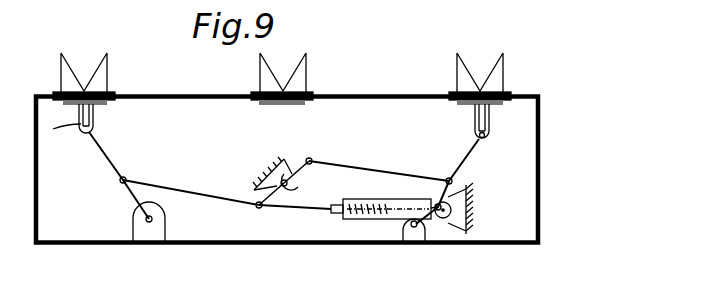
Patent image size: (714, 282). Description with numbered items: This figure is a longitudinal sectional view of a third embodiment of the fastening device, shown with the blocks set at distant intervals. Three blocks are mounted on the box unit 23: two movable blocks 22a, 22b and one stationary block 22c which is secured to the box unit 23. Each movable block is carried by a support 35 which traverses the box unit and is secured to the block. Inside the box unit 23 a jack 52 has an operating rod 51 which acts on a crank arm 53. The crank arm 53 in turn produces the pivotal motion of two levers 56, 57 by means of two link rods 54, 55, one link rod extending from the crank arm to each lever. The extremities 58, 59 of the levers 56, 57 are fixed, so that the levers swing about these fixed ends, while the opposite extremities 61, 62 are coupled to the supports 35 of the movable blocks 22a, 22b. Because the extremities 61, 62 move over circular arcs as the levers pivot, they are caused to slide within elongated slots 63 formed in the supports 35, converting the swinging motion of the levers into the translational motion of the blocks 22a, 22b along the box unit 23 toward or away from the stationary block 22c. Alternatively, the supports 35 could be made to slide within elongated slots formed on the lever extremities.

The movable block 22a is at (99, 76).
The movable block 22b is at (497, 78).
The stationary block 22c is at (297, 73).
The box unit 23 is at (541, 175).
The support 35 is at (506, 119).
The operating rod 51 is at (297, 207).
The jack 52 is at (372, 203).
The crank arm 53 is at (296, 160).
The link rod 54 is at (197, 186).
The link rod 55 is at (382, 167).
The lever 56 is at (116, 166).
The lever 57 is at (445, 170).
The fixed extremity 58 is at (148, 226).
The fixed extremity 59 is at (418, 232).
The lever extremity 61 is at (59, 134).
The lever extremity 62 is at (487, 133).
The elongated slot 63 is at (89, 112).